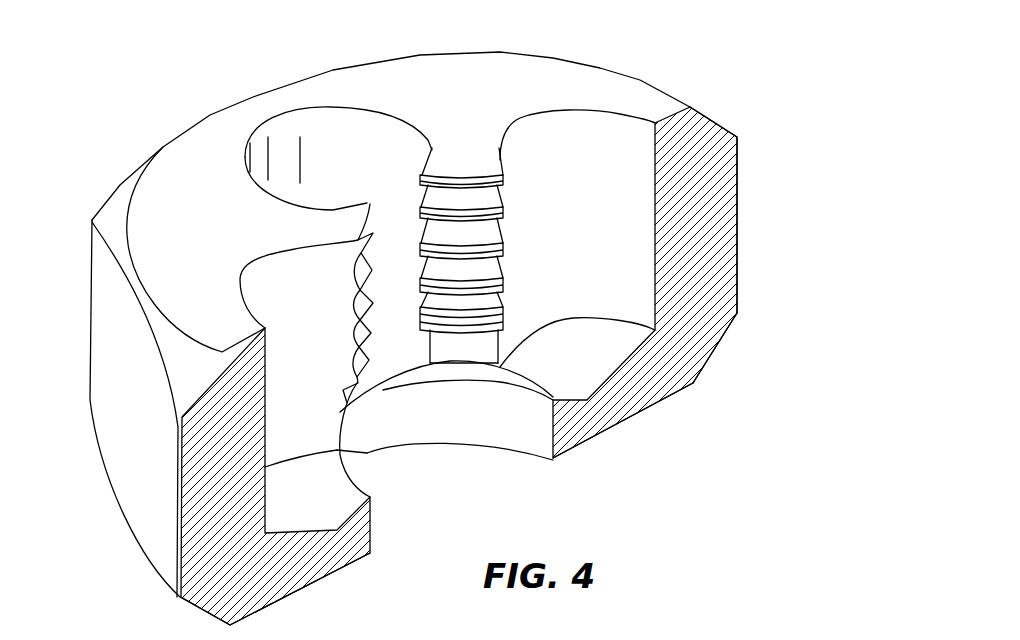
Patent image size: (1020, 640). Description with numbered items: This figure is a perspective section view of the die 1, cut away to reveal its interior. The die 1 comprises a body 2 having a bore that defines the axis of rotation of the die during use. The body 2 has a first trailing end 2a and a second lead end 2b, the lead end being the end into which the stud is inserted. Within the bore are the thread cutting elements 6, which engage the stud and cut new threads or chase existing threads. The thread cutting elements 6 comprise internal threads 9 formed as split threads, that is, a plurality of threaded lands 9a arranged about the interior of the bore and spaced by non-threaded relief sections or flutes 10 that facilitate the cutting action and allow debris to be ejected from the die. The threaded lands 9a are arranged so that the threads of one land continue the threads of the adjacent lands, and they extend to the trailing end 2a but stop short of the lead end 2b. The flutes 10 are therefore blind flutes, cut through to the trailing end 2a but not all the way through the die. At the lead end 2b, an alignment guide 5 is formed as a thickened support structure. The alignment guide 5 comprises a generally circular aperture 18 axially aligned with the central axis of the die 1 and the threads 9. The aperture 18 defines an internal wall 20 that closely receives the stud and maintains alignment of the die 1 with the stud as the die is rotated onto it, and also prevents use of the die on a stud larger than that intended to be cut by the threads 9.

The die 1 is at (694, 69).
The body 2 is at (722, 170).
The first trailing end 2a is at (478, 73).
The second lead end 2b is at (692, 390).
The alignment guide 5 is at (398, 602).
The thread cutting elements 6 is at (457, 162).
The internal threads 9 is at (343, 392).
The threaded lands 9a is at (372, 316).
The flutes 10 is at (285, 115).
The aperture 18 is at (525, 460).
The internal wall 20 is at (367, 452).